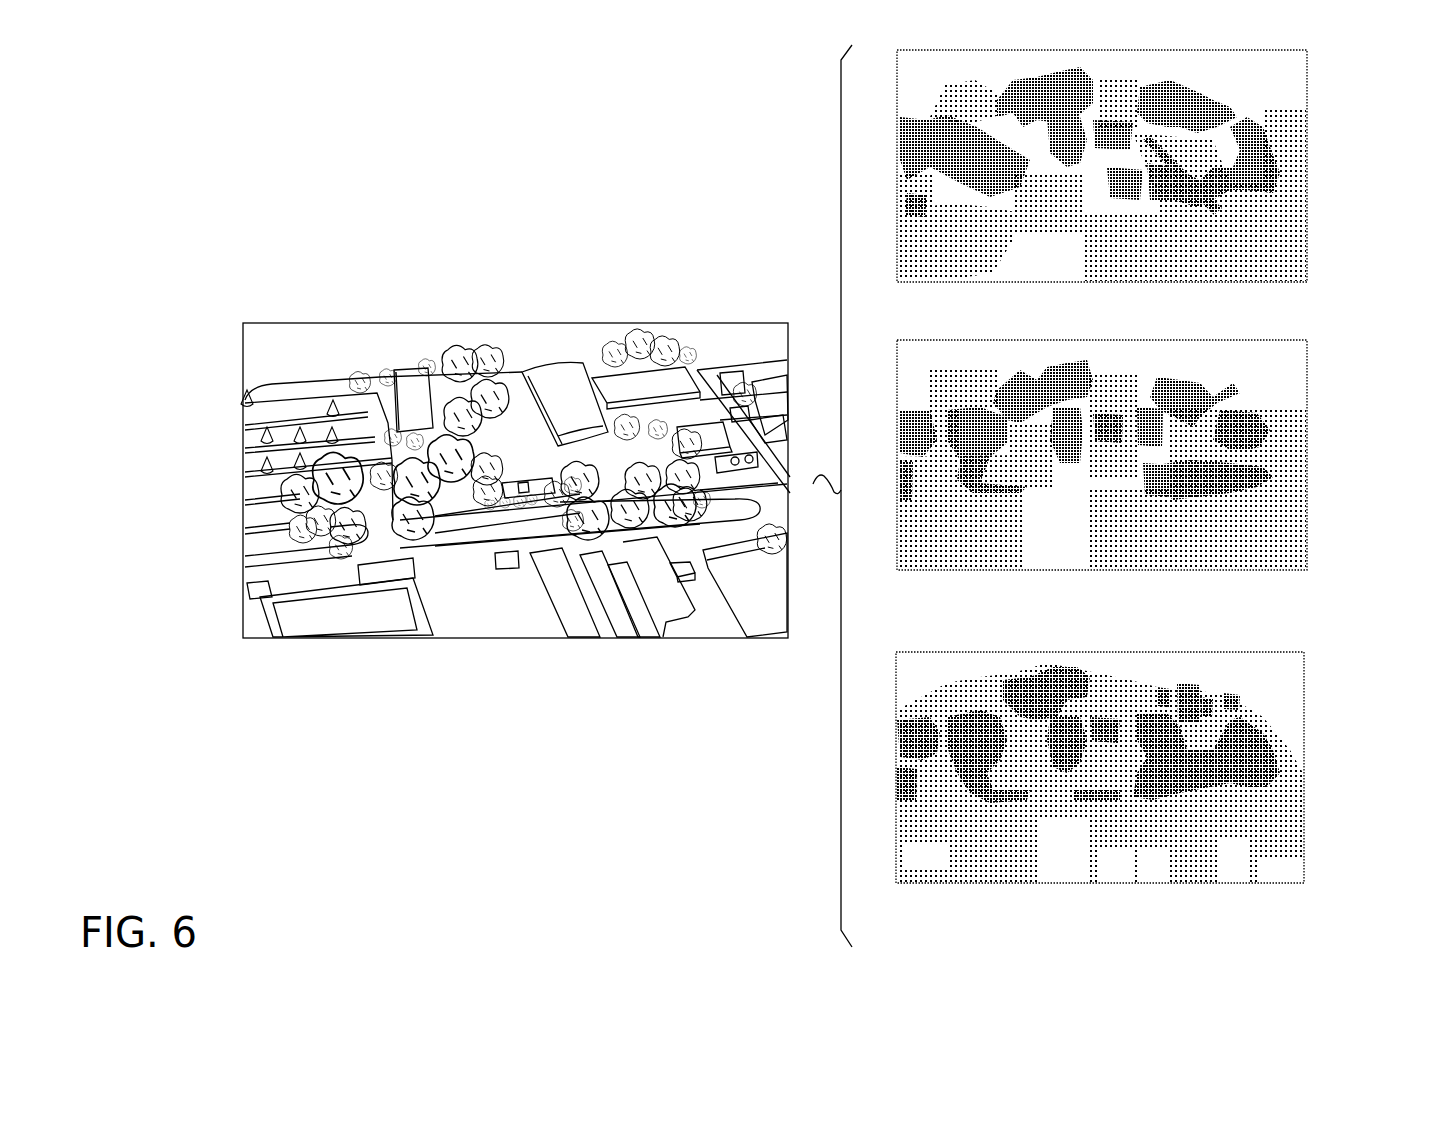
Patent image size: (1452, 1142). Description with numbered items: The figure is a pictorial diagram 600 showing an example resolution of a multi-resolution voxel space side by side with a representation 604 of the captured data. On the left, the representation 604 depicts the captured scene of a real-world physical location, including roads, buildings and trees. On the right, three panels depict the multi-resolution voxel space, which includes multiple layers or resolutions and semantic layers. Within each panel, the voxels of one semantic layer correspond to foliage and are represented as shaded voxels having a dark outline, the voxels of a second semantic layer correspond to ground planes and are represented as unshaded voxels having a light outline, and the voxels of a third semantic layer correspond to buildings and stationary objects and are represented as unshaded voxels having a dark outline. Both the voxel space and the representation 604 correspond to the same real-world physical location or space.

The pictorial diagram 600 is at (177, 77).
The representation of the captured data 604 is at (492, 667).